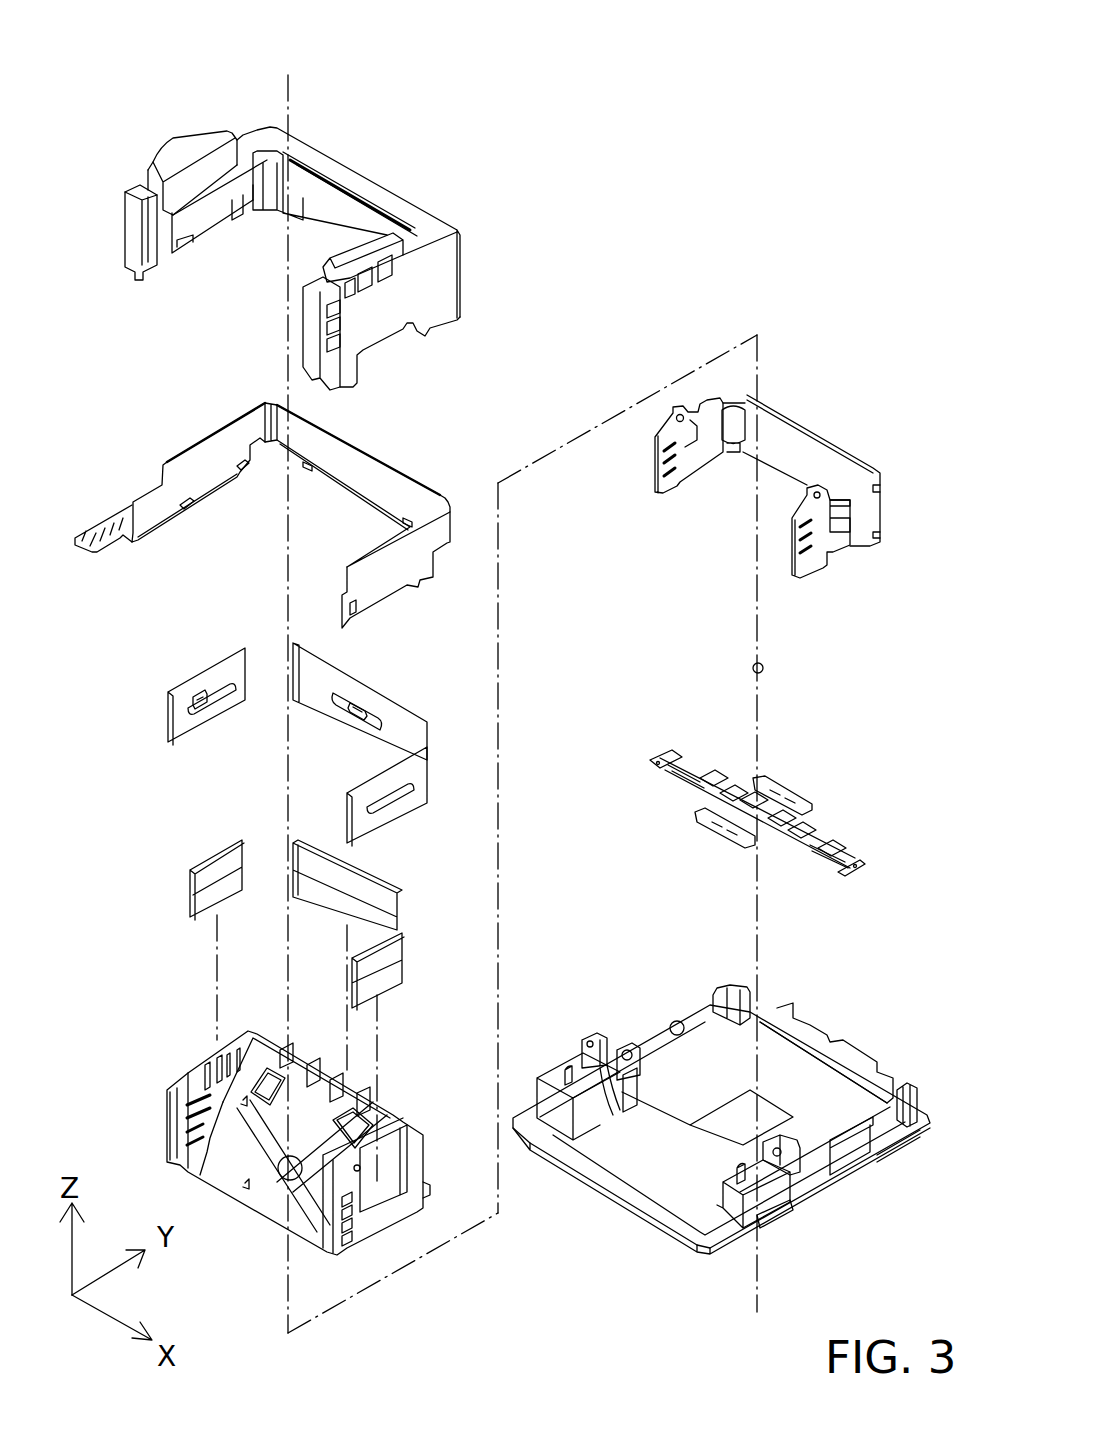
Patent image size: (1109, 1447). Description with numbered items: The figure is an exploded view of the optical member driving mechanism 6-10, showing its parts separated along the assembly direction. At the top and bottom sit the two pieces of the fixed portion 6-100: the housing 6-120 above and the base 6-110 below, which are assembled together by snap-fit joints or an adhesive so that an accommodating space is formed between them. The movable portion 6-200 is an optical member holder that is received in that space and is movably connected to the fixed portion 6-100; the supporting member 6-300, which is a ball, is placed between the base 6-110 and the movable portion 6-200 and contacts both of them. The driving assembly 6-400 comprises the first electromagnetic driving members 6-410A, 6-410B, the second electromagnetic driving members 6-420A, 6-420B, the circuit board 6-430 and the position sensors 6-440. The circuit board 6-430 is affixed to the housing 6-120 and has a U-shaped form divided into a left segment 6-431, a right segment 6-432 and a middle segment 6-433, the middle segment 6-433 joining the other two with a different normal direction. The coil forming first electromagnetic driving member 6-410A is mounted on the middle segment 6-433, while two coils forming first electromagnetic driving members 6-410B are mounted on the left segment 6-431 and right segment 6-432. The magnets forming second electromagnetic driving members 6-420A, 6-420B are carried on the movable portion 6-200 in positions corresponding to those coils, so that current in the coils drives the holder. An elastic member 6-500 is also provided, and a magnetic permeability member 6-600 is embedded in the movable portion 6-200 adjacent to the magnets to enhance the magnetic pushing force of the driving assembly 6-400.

The optical member driving mechanism 6-10 is at (118, 28).
The fixed portion 6-100 is at (592, 70).
The base 6-110 is at (813, 1037).
The housing 6-120 is at (178, 155).
The movable portion 6-200 is at (200, 1068).
The supporting member 6-300 is at (762, 665).
The driving assembly 6-400 is at (787, 68).
The first electromagnetic driving member 6-410A is at (372, 702).
The first electromagnetic driving member 6-410B is at (207, 682).
The second electromagnetic driving member 6-420A is at (372, 900).
The second electromagnetic driving member 6-420B is at (220, 870).
The circuit board 6-430 is at (136, 470).
The left segment 6-431 is at (223, 448).
The right segment 6-432 is at (380, 587).
The middle segment 6-433 is at (375, 487).
The position sensor 6-440 is at (193, 702).
The elastic member 6-500 is at (822, 828).
The magnetic permeability member 6-600 is at (813, 462).